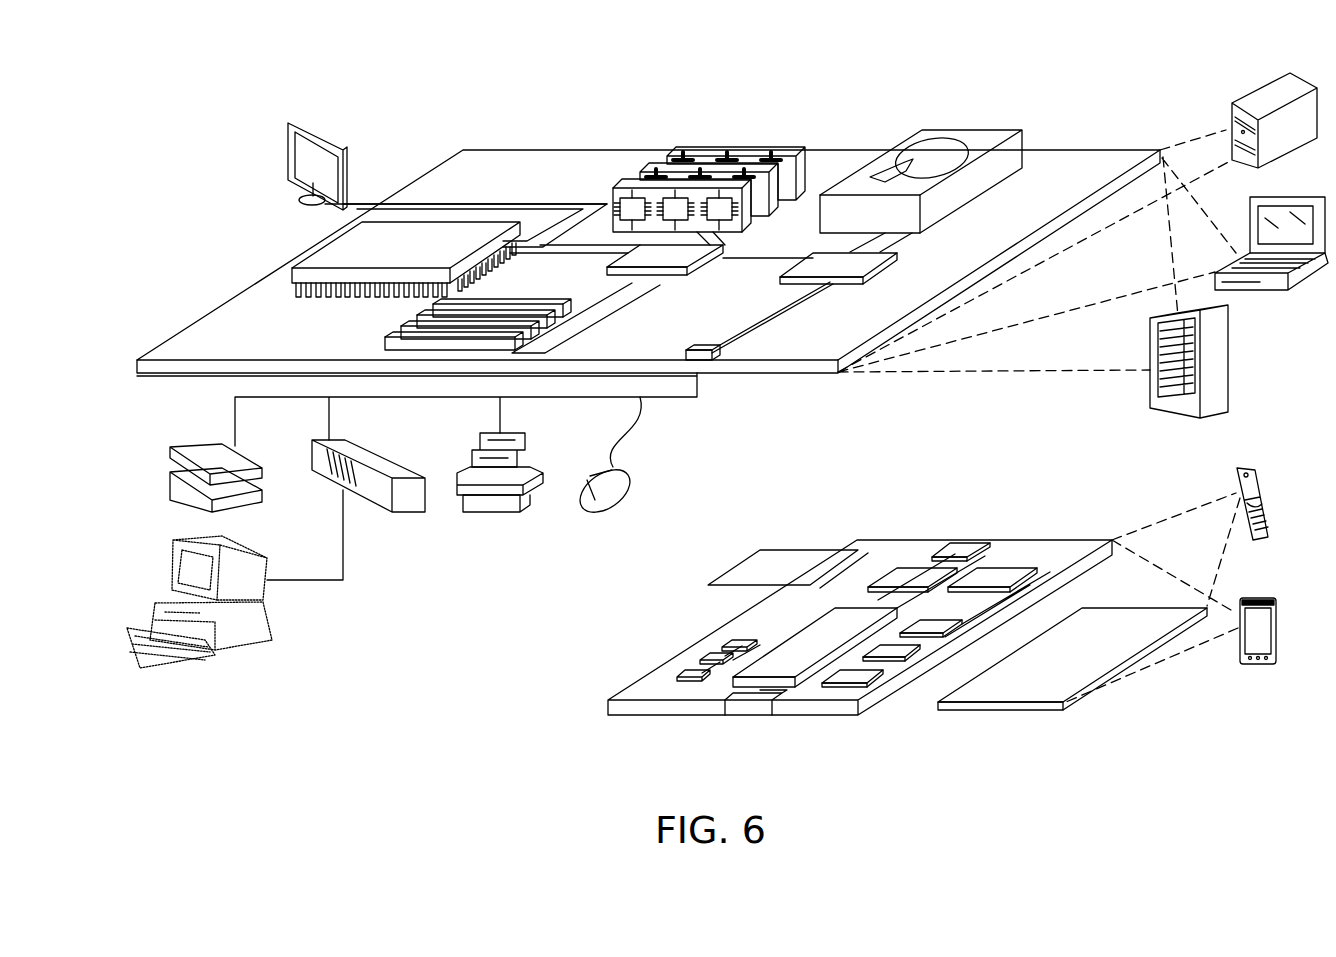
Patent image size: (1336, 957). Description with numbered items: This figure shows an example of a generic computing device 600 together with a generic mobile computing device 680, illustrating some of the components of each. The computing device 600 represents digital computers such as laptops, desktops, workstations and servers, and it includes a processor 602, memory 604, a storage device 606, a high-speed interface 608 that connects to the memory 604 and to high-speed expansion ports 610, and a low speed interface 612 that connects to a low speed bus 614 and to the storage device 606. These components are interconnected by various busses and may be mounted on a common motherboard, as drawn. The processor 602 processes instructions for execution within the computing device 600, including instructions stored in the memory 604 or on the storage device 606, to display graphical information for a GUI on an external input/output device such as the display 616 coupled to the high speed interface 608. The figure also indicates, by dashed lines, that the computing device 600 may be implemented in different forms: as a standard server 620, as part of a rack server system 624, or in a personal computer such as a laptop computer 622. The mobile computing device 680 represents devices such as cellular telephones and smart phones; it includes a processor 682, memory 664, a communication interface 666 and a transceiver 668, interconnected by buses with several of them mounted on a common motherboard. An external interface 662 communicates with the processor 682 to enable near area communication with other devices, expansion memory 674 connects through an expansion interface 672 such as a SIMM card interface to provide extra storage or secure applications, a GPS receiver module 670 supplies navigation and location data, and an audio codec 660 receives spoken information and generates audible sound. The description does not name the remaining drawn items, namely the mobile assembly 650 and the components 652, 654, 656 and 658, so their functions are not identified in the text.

The computing device 600 is at (410, 102).
The processor 602 is at (312, 252).
The memory 604 is at (741, 150).
The storage device 606 is at (960, 132).
The high-speed interface 608 is at (680, 268).
The high-speed expansion ports 610 is at (408, 325).
The low speed interface 612 is at (813, 258).
The low speed bus 614 is at (702, 349).
The display 616 is at (292, 122).
The standard server 620 is at (1250, 102).
The laptop computer 622 is at (1302, 196).
The rack server system 624 is at (1229, 362).
The mobile device system 650 is at (560, 722).
The processor module 652 is at (787, 654).
The display panel 654 is at (1108, 623).
The memory chip 656 is at (862, 674).
The memory chip 658 is at (902, 652).
The audio codec 660 is at (934, 622).
The external interface 662 is at (750, 704).
The memory 664 is at (705, 662).
The communication interface 666 is at (912, 570).
The transceiver 668 is at (1000, 572).
The GPS receiver module 670 is at (960, 546).
The expansion interface 672 is at (840, 548).
The expansion memory 674 is at (760, 548).
The mobile computing device 680 is at (1248, 468).
The processor 682 is at (1248, 598).